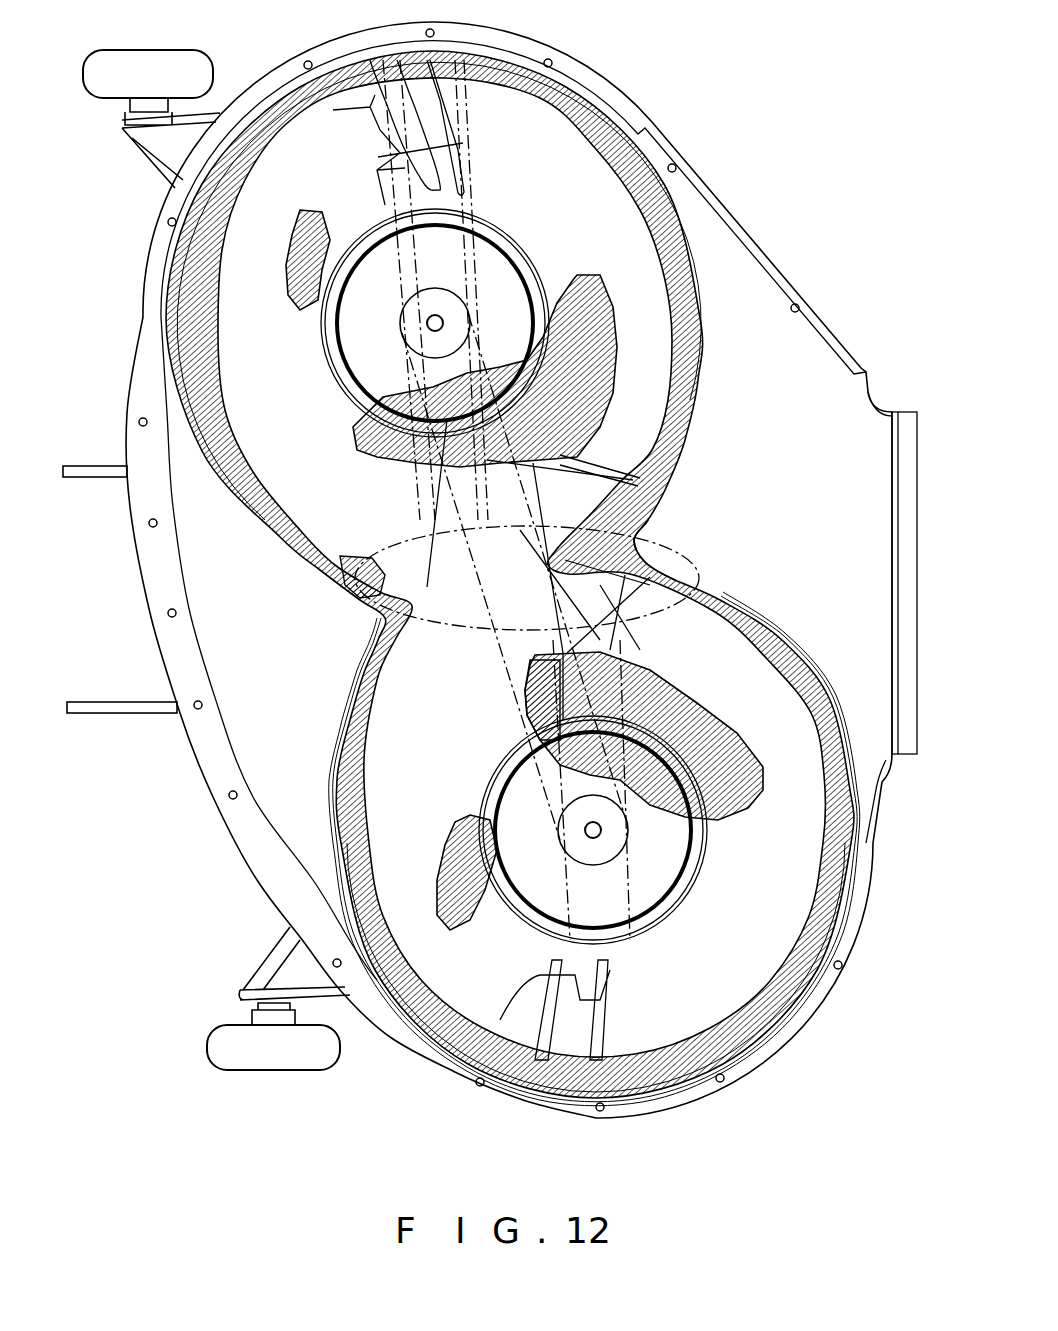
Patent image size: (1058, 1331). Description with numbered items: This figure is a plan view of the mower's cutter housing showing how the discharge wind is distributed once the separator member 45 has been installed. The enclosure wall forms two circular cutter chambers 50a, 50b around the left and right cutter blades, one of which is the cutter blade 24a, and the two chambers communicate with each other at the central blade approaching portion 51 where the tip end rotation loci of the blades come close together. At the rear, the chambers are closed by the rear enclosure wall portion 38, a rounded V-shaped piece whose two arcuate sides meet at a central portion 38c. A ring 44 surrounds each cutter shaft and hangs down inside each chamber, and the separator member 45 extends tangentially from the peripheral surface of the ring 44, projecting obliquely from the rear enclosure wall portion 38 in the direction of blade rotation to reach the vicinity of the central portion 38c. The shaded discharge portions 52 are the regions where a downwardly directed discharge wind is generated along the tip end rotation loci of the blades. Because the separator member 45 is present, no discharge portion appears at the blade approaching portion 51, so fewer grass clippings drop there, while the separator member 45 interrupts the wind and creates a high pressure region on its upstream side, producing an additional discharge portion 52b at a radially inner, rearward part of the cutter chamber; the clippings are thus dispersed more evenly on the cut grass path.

The cutter blade 24a is at (460, 131).
The rear enclosure wall portion 38 is at (703, 402).
The central portion 38c is at (634, 518).
The ring 44 is at (513, 262).
The separator member 45 is at (597, 470).
The cutter chamber 50a is at (564, 195).
The cutter chamber 50b is at (728, 962).
The blade approaching portion 51 is at (476, 627).
The discharge portion 52 is at (673, 373).
The additional discharge portion 52b is at (583, 337).